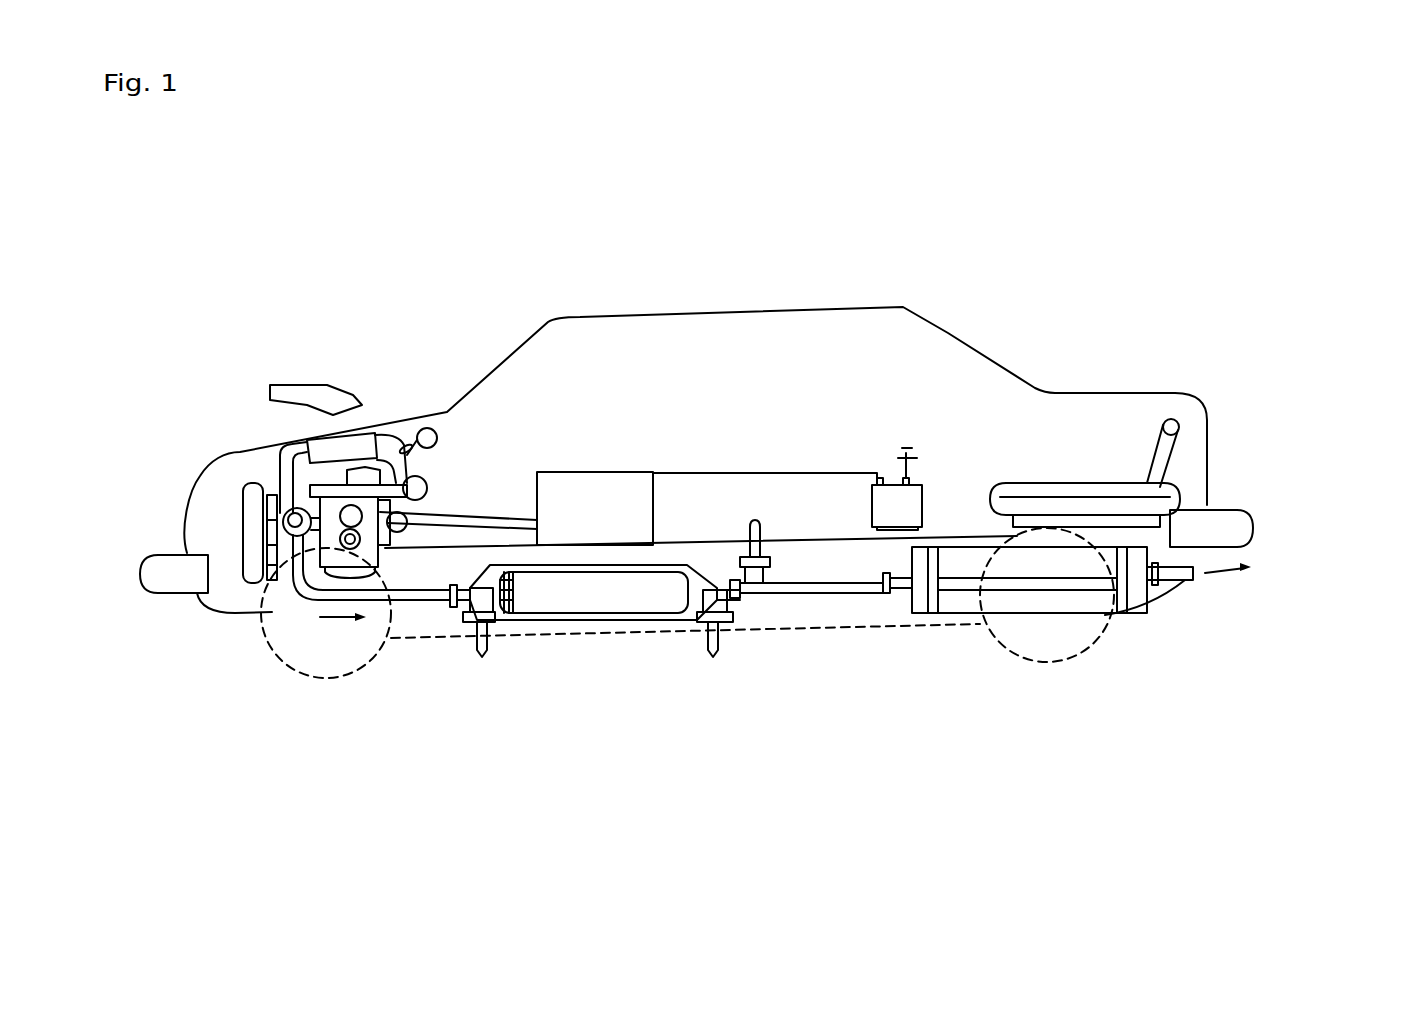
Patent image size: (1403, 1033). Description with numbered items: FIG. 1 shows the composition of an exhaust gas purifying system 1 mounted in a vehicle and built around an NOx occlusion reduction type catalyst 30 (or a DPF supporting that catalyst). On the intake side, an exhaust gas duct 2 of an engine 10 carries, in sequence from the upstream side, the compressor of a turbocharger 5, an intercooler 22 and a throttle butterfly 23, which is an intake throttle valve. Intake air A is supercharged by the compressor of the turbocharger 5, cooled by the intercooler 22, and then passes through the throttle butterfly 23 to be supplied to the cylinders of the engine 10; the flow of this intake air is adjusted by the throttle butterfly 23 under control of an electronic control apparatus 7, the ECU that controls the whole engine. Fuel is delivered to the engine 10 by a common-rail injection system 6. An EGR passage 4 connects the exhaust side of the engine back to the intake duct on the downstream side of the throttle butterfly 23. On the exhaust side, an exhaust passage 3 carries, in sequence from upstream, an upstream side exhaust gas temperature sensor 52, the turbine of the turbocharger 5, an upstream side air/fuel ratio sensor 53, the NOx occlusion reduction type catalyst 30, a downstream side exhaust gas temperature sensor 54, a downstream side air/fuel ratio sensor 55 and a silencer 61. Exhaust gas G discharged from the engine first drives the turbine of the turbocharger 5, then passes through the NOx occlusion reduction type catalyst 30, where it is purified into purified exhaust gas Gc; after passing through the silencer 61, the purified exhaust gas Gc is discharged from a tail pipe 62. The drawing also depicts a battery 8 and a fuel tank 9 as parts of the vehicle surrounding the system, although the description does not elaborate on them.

The exhaust gas purifying system 1 is at (968, 256).
The exhaust gas duct 2 is at (430, 432).
The exhaust passage 3 is at (768, 595).
The EGR passage 4 is at (395, 463).
The turbocharger 5 is at (300, 542).
The common-rail injection system 6 is at (420, 445).
The electronic control apparatus 7 is at (635, 487).
The Battery 8 is at (920, 492).
The Fuel tank 9 is at (1090, 485).
The engine 10 is at (390, 385).
The intercooler 22 is at (367, 430).
The throttle butterfly 23 is at (410, 447).
The NOx occlusion reduction type catalyst 30 is at (548, 602).
The upstream side exhaust gas temperature sensor 52 is at (453, 607).
The upstream side air/fuel ratio sensor 53 is at (482, 658).
The downstream side exhaust gas temperature sensor 54 is at (713, 647).
The downstream side air/fuel ratio sensor 55 is at (752, 522).
The silencer 61 is at (1055, 613).
The tail pipe 62 is at (1183, 578).
The air A is at (280, 377).
The exhaust gas G is at (334, 630).
The purified exhaust gas Gc is at (1225, 577).